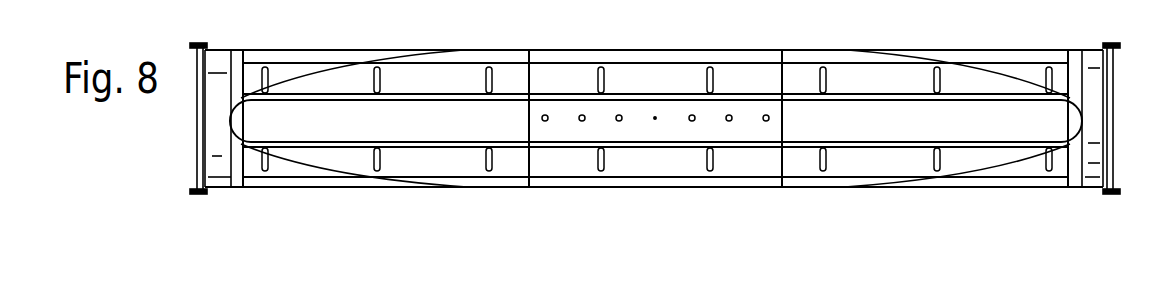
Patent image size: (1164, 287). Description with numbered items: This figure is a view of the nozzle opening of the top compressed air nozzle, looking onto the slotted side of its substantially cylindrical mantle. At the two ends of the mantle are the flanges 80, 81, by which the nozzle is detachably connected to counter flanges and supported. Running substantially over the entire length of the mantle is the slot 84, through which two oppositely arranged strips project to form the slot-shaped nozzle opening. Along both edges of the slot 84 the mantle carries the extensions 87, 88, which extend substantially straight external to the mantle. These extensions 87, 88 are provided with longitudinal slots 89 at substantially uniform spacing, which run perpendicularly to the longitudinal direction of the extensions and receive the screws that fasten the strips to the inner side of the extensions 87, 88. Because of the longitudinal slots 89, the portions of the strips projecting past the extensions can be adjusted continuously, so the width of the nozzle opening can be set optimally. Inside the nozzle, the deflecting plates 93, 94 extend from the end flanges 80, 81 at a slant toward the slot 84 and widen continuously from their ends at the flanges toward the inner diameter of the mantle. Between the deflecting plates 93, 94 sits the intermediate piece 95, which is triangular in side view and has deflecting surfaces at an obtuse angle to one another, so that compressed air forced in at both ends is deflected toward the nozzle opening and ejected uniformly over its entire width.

The flange 80 is at (208, 130).
The flange 81 is at (1098, 140).
The slot 84 is at (335, 128).
The extension 87 is at (683, 80).
The extension 88 is at (749, 153).
The longitudinal slots 89 is at (377, 67).
The deflecting plate 93 is at (302, 80).
The deflecting plate 94 is at (978, 63).
The intermediate piece 95 is at (758, 85).